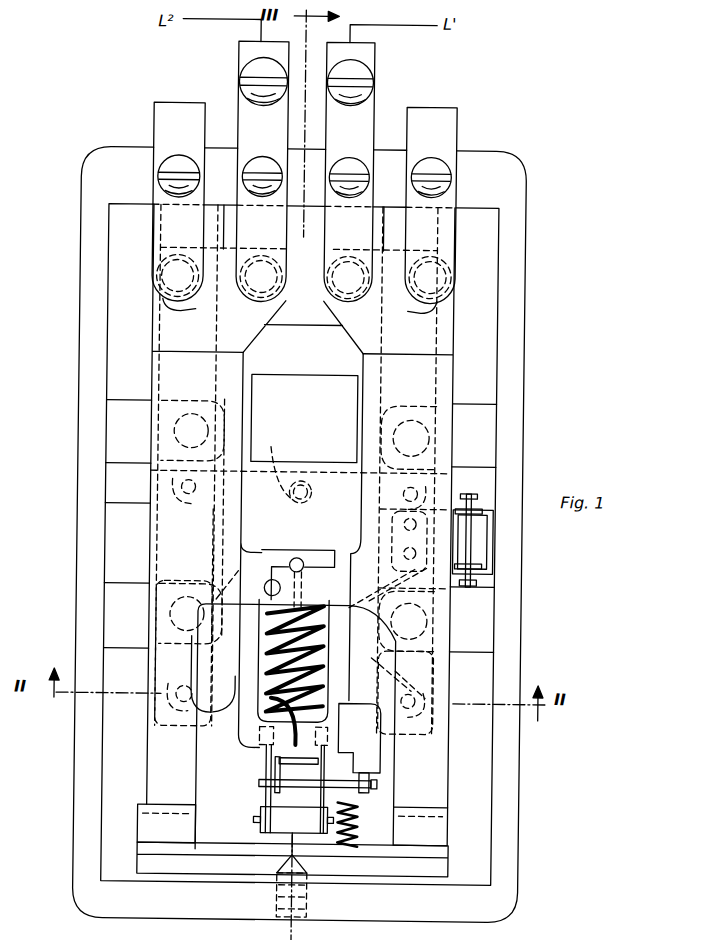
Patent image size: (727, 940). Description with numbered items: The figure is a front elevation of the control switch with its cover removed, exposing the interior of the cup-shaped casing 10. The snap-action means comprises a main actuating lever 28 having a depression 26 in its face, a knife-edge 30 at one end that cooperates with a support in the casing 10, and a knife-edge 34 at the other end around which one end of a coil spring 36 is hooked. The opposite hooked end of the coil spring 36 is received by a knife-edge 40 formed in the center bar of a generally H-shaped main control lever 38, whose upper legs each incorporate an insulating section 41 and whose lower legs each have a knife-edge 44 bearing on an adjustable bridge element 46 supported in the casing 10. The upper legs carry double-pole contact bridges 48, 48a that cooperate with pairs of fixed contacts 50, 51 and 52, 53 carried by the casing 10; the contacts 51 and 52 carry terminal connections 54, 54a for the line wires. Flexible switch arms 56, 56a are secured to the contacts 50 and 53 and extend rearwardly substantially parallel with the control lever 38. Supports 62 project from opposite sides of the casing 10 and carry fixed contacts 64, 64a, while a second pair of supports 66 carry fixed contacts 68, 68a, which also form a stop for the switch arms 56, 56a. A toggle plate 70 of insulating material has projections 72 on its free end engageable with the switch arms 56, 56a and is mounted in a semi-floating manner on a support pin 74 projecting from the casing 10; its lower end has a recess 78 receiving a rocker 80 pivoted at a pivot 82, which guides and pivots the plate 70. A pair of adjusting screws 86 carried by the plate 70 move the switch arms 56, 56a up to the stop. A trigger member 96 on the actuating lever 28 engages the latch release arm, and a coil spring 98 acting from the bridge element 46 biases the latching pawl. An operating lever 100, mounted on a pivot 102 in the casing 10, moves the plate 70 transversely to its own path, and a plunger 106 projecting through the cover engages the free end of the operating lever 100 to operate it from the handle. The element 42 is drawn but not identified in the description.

The casing 10 is at (514, 220).
The depression 26 is at (300, 481).
The main actuating lever 28 is at (259, 517).
The knife-edge 30 is at (325, 462).
The knife-edge 34 is at (274, 748).
The coil spring 36 is at (288, 660).
The main control lever 38 is at (150, 508).
The knife-edge 40 is at (292, 558).
The insulating section 41 is at (154, 361).
The plunger bar 42 is at (323, 562).
The knife-edge 44 is at (163, 800).
The adjustable bridge element 46 is at (440, 840).
The double-pole contact bridge 48 is at (427, 312).
The double-pole contact bridge 48a is at (190, 308).
The fixed contact 50 is at (443, 115).
The fixed contact 51 is at (361, 123).
The fixed contact 52 is at (243, 106).
The fixed contact 53 is at (162, 112).
The terminal connection 54 is at (344, 68).
The terminal connection 54a is at (245, 70).
The flexible switch arm 56 is at (455, 355).
The flexible switch arm 56a is at (158, 385).
The supports 62 is at (120, 425).
The fixed contact 64 is at (441, 422).
The fixed contact 64a is at (163, 452).
The supports 66 is at (119, 605).
The fixed contact 68 is at (446, 640).
The fixed contact 68a is at (160, 630).
The toggle plate 70 is at (206, 738).
The projections 72 is at (158, 483).
The support pin 74 is at (274, 463).
The recess 78 is at (263, 752).
The rocker 80 is at (263, 800).
The pivot 82 is at (259, 818).
The adjusting screws 86 is at (431, 690).
The trigger member 96 is at (376, 755).
The coil spring 98 is at (359, 833).
The operating lever 100 is at (478, 585).
The pivot 102 is at (471, 538).
The plunger 106 is at (163, 672).